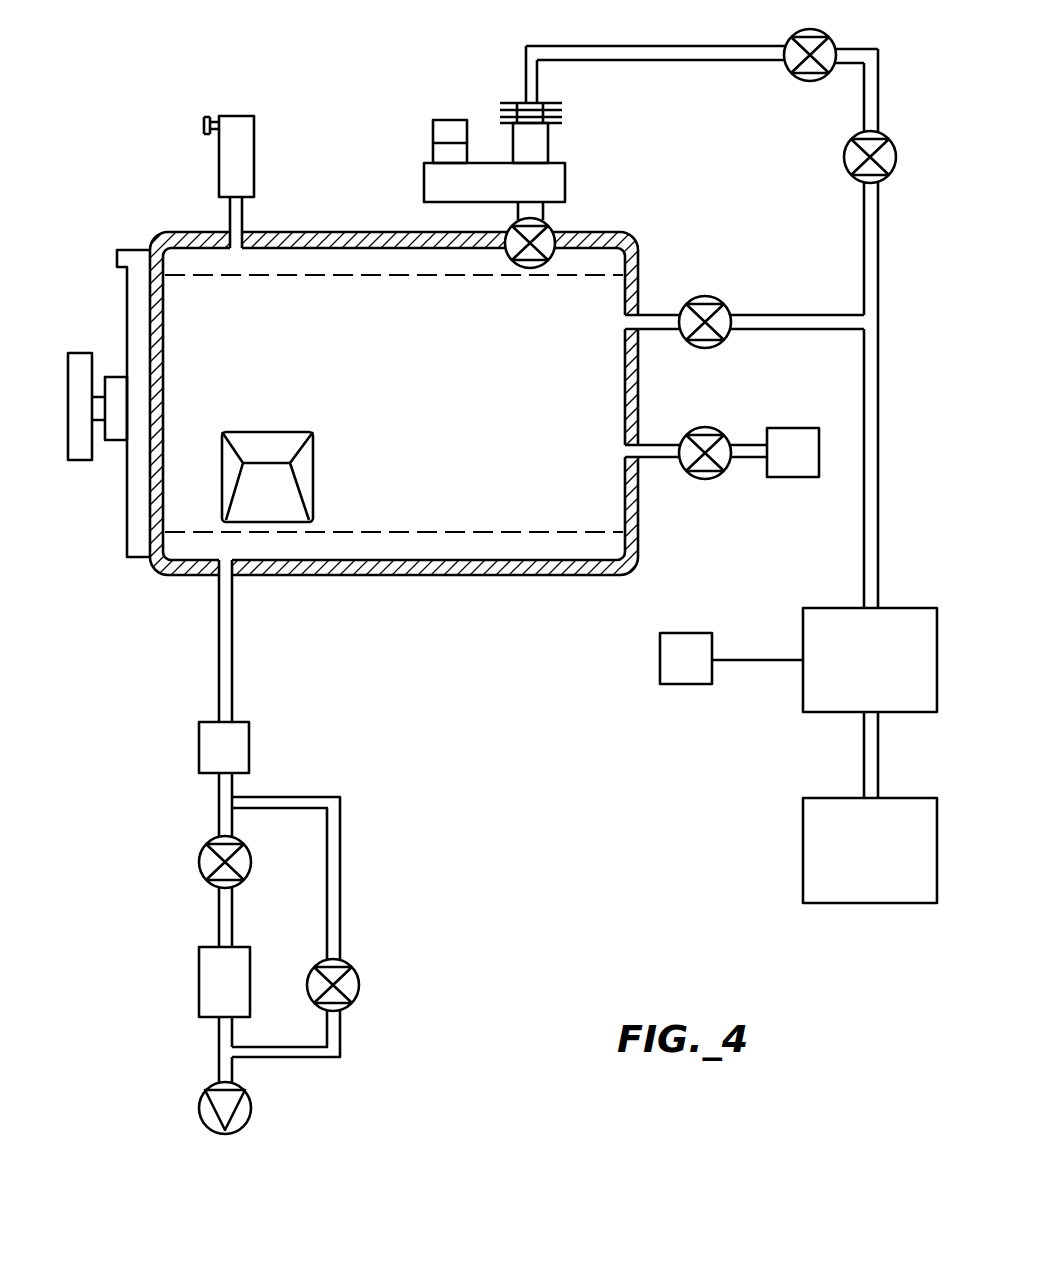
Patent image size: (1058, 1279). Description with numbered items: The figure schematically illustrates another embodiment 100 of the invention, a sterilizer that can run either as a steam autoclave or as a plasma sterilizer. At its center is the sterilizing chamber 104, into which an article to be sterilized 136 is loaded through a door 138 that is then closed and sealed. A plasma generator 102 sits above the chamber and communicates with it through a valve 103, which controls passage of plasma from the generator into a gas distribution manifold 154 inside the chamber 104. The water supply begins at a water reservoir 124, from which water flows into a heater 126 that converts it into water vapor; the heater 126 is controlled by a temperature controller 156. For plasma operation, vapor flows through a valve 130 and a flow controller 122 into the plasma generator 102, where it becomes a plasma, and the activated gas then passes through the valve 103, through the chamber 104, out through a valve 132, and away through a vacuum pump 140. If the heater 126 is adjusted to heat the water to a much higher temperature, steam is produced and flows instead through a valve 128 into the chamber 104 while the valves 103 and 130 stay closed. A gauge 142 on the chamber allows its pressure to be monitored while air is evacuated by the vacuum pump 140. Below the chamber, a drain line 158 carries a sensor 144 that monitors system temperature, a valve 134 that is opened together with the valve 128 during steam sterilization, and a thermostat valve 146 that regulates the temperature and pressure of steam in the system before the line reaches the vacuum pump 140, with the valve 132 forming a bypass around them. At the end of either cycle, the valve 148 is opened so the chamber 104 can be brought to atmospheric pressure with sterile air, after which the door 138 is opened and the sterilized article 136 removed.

The plasma sterilizer embodiment 100 is at (433, 626).
The plasma generator 102 is at (436, 106).
The valve 103 is at (555, 229).
The sterilizing chamber 104 is at (452, 513).
The flow controller 122 is at (786, 68).
The water reservoir 124 is at (803, 846).
The heater 126 is at (803, 626).
The valve 128 is at (715, 299).
The valve 130 is at (846, 166).
The valve 132 is at (360, 976).
The valve 134 is at (202, 856).
The article to be sterilized 136 is at (222, 475).
The door 138 is at (131, 305).
The vacuum pump 140 is at (202, 1101).
The gauge 142 is at (212, 122).
The sensor 144 is at (199, 750).
The thermostat valve 146 is at (199, 961).
The valve 148 is at (715, 431).
The gas distribution manifold 154 is at (385, 265).
The temperature controller 156 is at (658, 673).
The drain line 158 is at (219, 638).